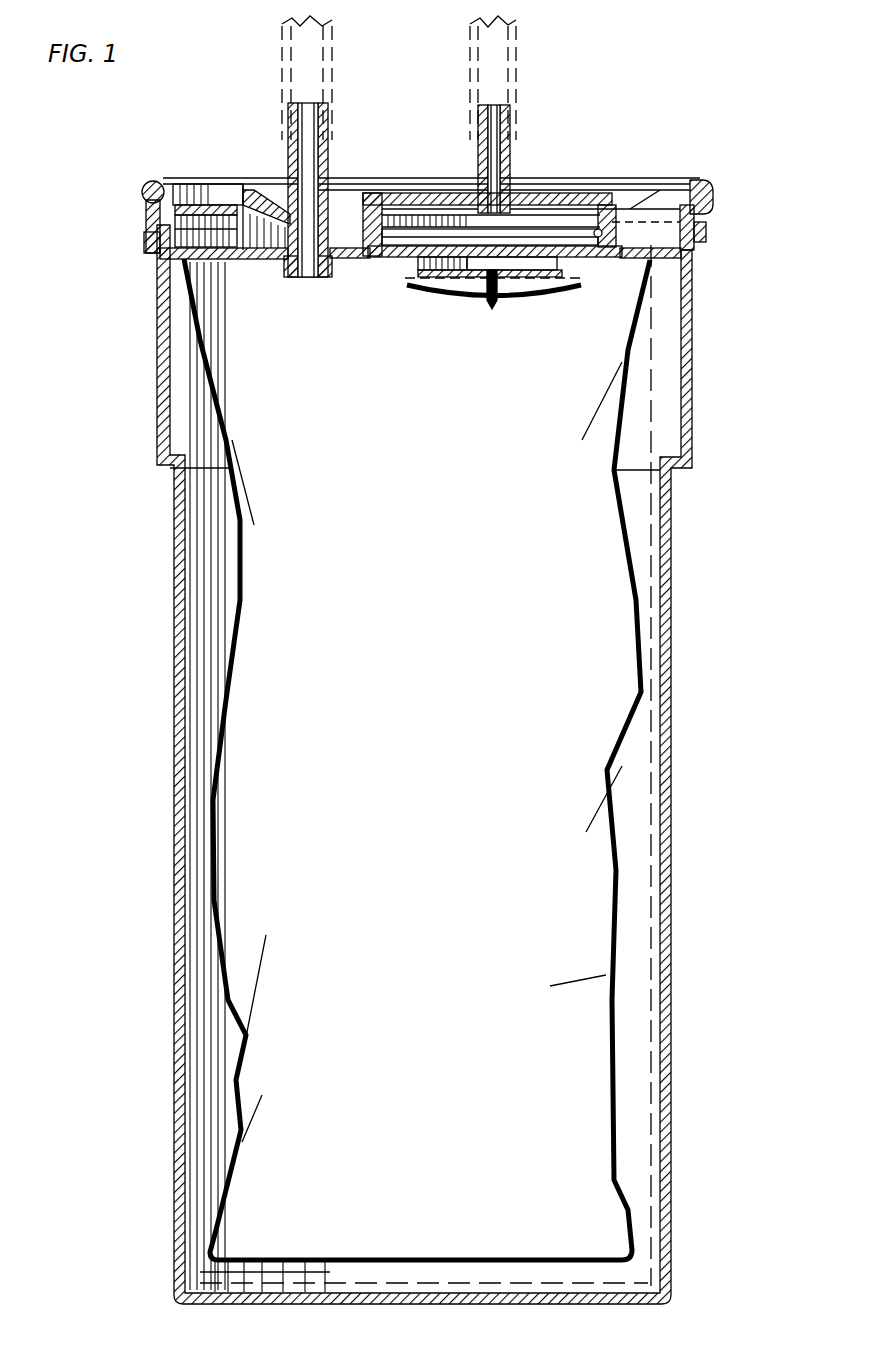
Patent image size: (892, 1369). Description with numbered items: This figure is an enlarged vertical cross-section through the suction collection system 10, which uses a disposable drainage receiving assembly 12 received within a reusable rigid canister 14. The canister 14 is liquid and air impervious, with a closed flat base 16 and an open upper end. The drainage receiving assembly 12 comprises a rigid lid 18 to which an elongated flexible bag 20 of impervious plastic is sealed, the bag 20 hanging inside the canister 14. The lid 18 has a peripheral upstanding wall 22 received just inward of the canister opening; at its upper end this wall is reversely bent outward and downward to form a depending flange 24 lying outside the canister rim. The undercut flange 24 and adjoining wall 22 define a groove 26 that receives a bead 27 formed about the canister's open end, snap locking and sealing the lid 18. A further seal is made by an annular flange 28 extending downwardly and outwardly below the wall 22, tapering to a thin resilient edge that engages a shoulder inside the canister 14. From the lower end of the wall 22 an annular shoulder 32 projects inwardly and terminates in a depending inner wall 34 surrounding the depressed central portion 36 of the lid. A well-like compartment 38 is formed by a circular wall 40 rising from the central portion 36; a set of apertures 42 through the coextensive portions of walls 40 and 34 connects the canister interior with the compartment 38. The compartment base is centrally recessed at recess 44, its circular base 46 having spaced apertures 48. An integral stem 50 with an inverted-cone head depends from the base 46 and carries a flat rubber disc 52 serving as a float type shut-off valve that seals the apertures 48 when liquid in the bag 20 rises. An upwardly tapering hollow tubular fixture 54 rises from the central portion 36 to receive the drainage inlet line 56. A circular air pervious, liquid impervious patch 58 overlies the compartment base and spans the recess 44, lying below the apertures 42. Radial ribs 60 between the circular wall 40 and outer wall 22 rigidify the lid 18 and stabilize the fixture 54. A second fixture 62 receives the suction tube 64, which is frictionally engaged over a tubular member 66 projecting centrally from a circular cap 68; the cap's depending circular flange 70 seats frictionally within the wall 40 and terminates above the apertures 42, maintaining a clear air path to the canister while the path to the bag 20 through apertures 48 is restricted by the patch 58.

The suction collection system 10 is at (424, 176).
The drainage receiving assembly 12 is at (652, 320).
The rigid canister 14 is at (683, 592).
The base 16 is at (628, 1304).
The lid 18 is at (668, 181).
The flexible bag 20 is at (622, 768).
The peripheral upstanding wall 22 is at (197, 184).
The depending flange 24 is at (714, 204).
The groove 26 is at (143, 195).
The bead 27 is at (152, 182).
The annular flange 28 is at (160, 250).
The annular shoulder 32 is at (225, 222).
The depending inner wall 34 is at (225, 252).
The depressed central portion 36 is at (345, 266).
The well-like compartment 38 is at (596, 190).
The circular wall 40 is at (354, 252).
The apertures 42 is at (621, 254).
The recess 44 is at (452, 274).
The circular base 46 is at (463, 287).
The apertures 48 is at (528, 292).
The stem 50 is at (488, 302).
The disc 52 is at (570, 295).
The tubular fixture 54 is at (329, 164).
The inlet line 56 is at (332, 56).
The patch 58 is at (548, 236).
The ribs 60 is at (279, 213).
The second fixture 62 is at (461, 199).
The suction tube 64 is at (513, 48).
The tubular member 66 is at (512, 160).
The cap 68 is at (601, 199).
The circular flange 70 is at (410, 200).